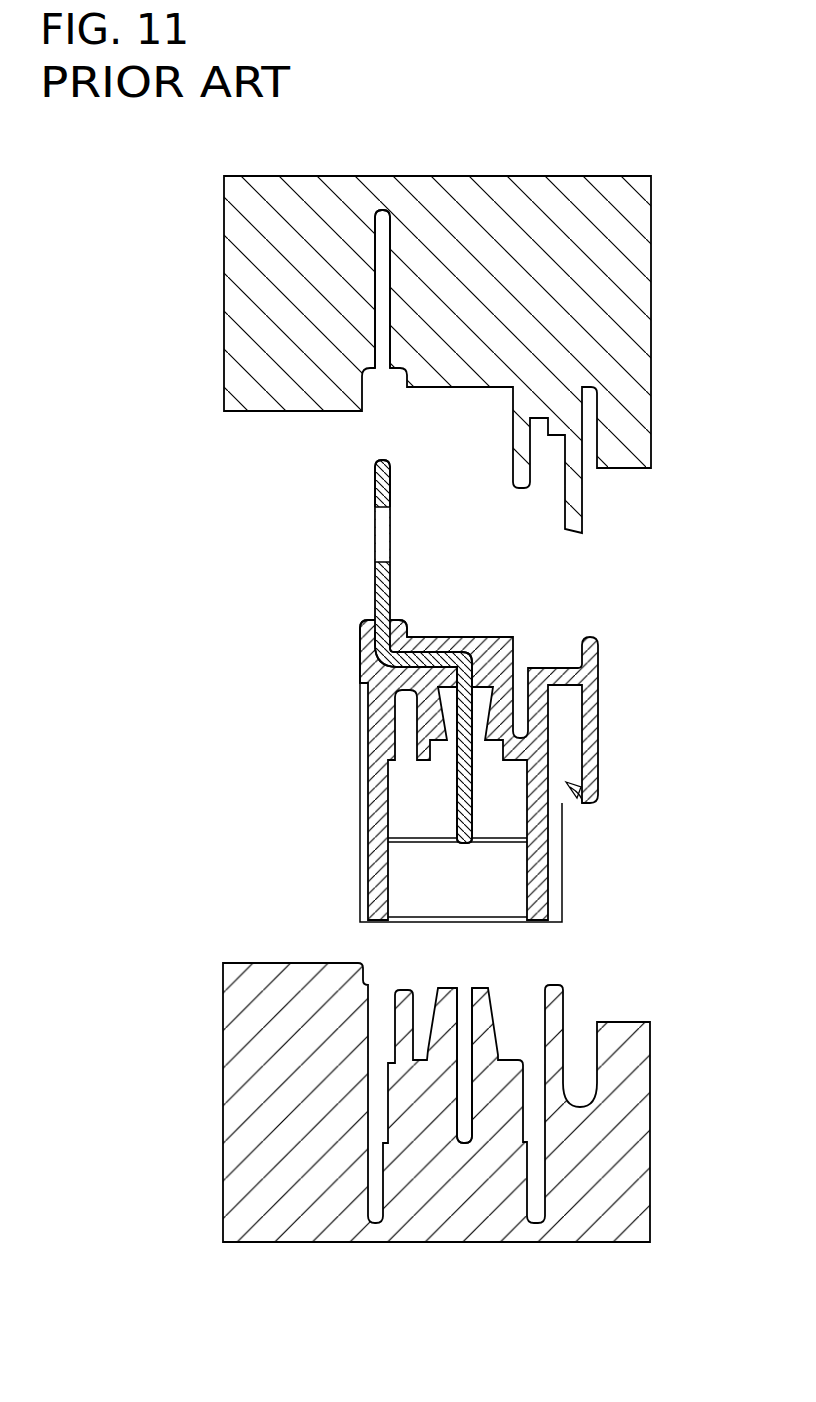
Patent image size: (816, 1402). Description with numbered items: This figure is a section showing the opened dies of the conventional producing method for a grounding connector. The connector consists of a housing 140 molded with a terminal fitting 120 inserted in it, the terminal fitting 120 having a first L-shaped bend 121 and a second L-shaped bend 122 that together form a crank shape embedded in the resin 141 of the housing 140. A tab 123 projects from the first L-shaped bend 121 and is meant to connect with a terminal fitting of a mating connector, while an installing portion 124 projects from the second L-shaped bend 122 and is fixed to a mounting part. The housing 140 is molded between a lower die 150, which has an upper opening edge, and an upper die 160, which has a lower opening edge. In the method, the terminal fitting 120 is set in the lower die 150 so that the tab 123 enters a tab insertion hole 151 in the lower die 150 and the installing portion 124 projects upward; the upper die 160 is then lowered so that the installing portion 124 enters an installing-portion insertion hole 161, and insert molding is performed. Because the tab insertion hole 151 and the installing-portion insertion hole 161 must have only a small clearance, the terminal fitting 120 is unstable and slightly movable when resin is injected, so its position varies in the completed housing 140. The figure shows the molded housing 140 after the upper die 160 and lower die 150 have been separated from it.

The terminal fitting 120 is at (359, 603).
The first L-shaped bend 121 is at (462, 658).
The second L-shaped bend 122 is at (387, 655).
The tab 123 is at (474, 815).
The installing portion 124 is at (377, 484).
The housing 140 is at (611, 718).
The resin 141 is at (412, 636).
The lower die 150 is at (666, 1080).
The tab insertion hole 151 is at (463, 1125).
The upper die 160 is at (666, 270).
The installing-portion insertion hole 161 is at (383, 240).